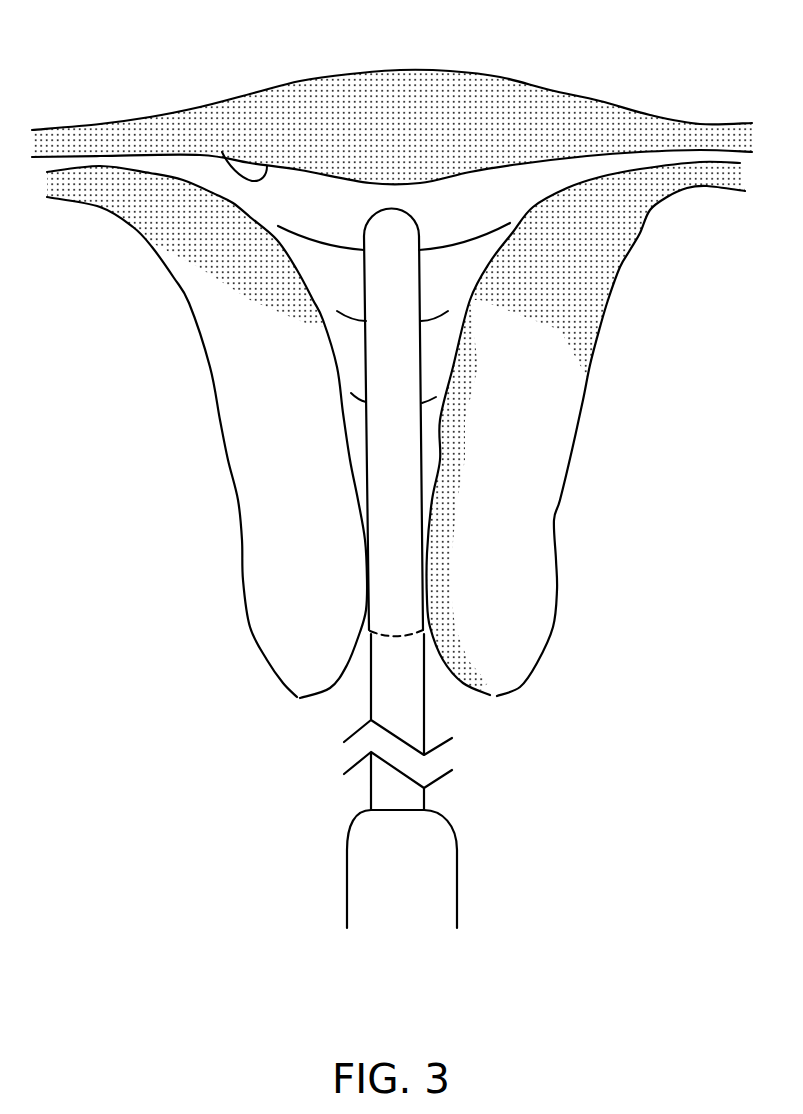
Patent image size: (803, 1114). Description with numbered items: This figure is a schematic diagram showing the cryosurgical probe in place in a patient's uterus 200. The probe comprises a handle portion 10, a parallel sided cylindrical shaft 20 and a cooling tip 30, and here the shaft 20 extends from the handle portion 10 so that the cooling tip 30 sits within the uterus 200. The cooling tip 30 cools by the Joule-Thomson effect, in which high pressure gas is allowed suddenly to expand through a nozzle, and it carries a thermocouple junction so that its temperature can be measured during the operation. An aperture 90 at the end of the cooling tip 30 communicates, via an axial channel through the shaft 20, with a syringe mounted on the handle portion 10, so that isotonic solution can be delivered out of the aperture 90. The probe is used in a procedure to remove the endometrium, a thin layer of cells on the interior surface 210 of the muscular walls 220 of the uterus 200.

The handle portion 10 is at (421, 899).
The parallel sided cylindrical shaft 20 is at (380, 702).
The cooling tip 30 is at (375, 369).
The aperture 90 is at (388, 206).
The uterus 200 is at (135, 117).
The interior surface 210 is at (222, 152).
The muscular walls 220 is at (517, 418).